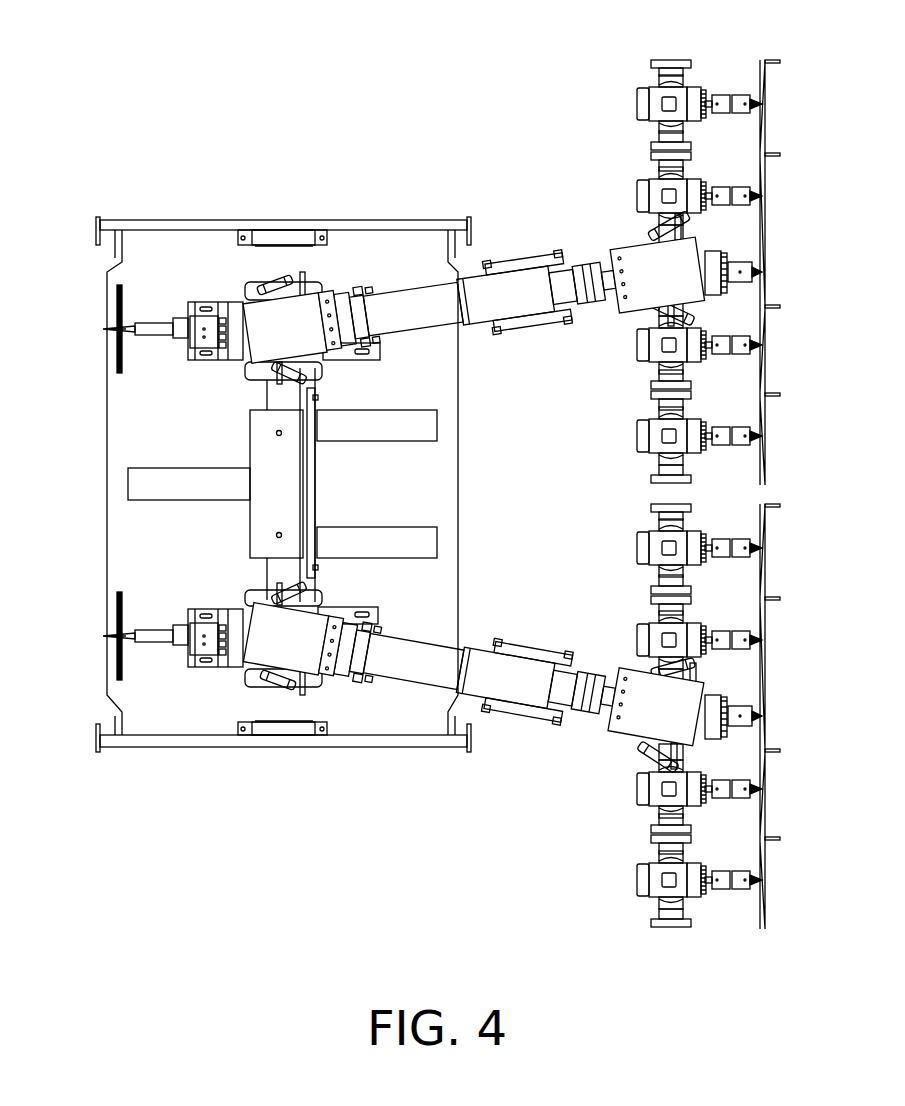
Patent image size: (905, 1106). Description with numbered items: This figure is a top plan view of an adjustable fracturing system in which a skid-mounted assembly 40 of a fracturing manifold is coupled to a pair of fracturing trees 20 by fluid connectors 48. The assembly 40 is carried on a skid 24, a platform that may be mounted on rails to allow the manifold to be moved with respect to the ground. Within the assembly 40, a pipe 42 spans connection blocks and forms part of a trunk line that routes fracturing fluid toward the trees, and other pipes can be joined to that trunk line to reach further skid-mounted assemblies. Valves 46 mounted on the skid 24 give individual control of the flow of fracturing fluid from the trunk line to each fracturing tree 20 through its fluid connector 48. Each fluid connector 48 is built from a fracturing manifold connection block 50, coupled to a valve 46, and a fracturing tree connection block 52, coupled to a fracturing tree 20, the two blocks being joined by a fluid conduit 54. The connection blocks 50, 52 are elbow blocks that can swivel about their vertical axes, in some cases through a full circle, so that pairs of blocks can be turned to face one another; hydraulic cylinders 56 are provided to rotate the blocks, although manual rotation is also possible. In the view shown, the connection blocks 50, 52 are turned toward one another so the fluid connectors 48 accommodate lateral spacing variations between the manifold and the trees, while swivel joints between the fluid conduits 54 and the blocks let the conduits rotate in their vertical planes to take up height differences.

The fracturing tree 20 is at (621, 393).
The skid 24 is at (107, 535).
The skid-mounted assembly 40 is at (462, 467).
The pipe 42 is at (275, 400).
The valve 46 is at (233, 305).
The fluid connector 48 is at (456, 526).
The fracturing manifold connection block 50 is at (300, 310).
The fracturing tree connection block 52 is at (615, 245).
The fluid conduit 54 is at (427, 334).
The hydraulic cylinder 56 is at (287, 298).